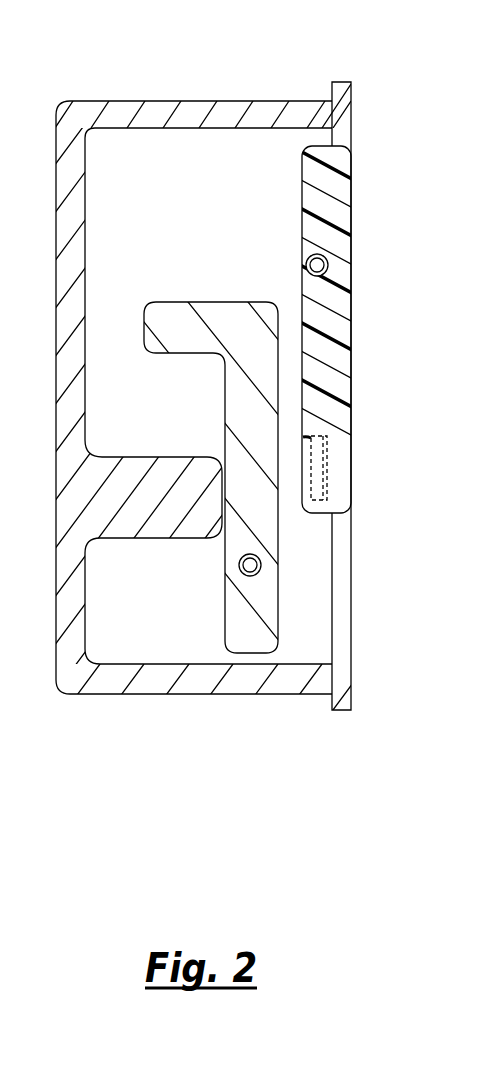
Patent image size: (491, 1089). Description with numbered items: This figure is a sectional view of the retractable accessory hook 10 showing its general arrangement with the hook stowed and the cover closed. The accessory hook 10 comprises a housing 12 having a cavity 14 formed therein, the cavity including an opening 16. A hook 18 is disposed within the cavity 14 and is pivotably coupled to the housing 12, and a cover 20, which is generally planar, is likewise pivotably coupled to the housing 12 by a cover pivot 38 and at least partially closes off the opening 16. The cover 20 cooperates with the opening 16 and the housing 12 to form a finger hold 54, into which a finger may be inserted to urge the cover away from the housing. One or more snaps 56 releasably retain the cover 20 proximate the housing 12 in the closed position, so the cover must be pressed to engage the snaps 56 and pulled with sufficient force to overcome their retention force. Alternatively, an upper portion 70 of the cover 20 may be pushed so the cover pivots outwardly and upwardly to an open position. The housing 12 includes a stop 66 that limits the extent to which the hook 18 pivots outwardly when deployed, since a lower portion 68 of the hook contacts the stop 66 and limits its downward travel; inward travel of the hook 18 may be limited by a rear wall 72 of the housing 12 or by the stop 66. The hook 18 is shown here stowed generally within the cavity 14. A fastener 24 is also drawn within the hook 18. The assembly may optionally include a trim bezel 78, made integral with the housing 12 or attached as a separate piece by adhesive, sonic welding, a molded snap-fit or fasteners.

The retractable accessory hook 10 is at (185, 452).
The housing 12 is at (185, 452).
The cavity 14 is at (108, 240).
The opening 16 is at (311, 570).
The hook 18 is at (200, 429).
The cover 20 is at (325, 330).
The fastener 24 is at (239, 564).
The cover pivot 38 is at (306, 258).
The finger hold 54 is at (362, 612).
The snap 56 is at (332, 467).
The stop 66 is at (130, 538).
The lower portion 68 is at (225, 610).
The upper portion 70 is at (302, 168).
The rear wall 72 is at (86, 375).
The trim bezel 78 is at (342, 712).